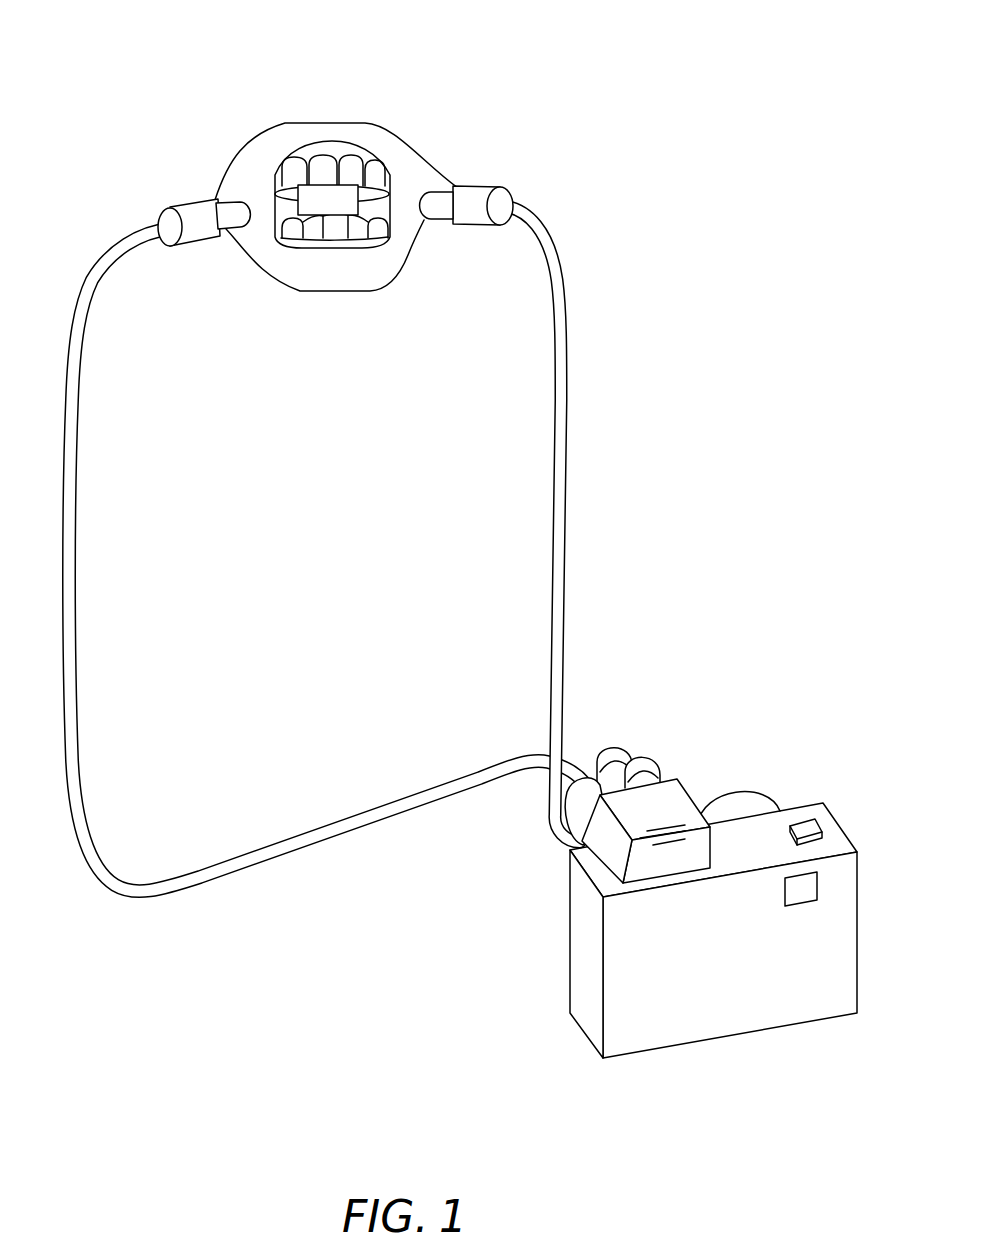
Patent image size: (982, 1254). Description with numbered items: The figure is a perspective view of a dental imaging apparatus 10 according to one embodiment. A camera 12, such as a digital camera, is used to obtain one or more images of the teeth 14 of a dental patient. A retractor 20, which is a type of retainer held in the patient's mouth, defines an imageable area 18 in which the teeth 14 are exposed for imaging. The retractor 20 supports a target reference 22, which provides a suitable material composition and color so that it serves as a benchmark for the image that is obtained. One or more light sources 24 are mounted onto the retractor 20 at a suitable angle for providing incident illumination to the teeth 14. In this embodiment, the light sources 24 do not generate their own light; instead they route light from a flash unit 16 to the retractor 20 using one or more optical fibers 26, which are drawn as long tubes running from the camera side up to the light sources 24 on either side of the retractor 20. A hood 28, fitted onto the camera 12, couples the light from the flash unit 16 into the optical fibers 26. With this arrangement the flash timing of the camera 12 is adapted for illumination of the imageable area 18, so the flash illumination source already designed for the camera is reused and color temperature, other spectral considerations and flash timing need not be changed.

The dental imaging apparatus 10 is at (214, 928).
The camera 12 is at (750, 1012).
The teeth 14 is at (323, 167).
The flash unit 16 is at (677, 800).
The imageable area 18 is at (337, 248).
The retractor 20 is at (407, 135).
The target reference 22 is at (353, 215).
The light sources 24 is at (245, 215).
The optical fibers 26 is at (563, 577).
The hood 28 is at (600, 863).